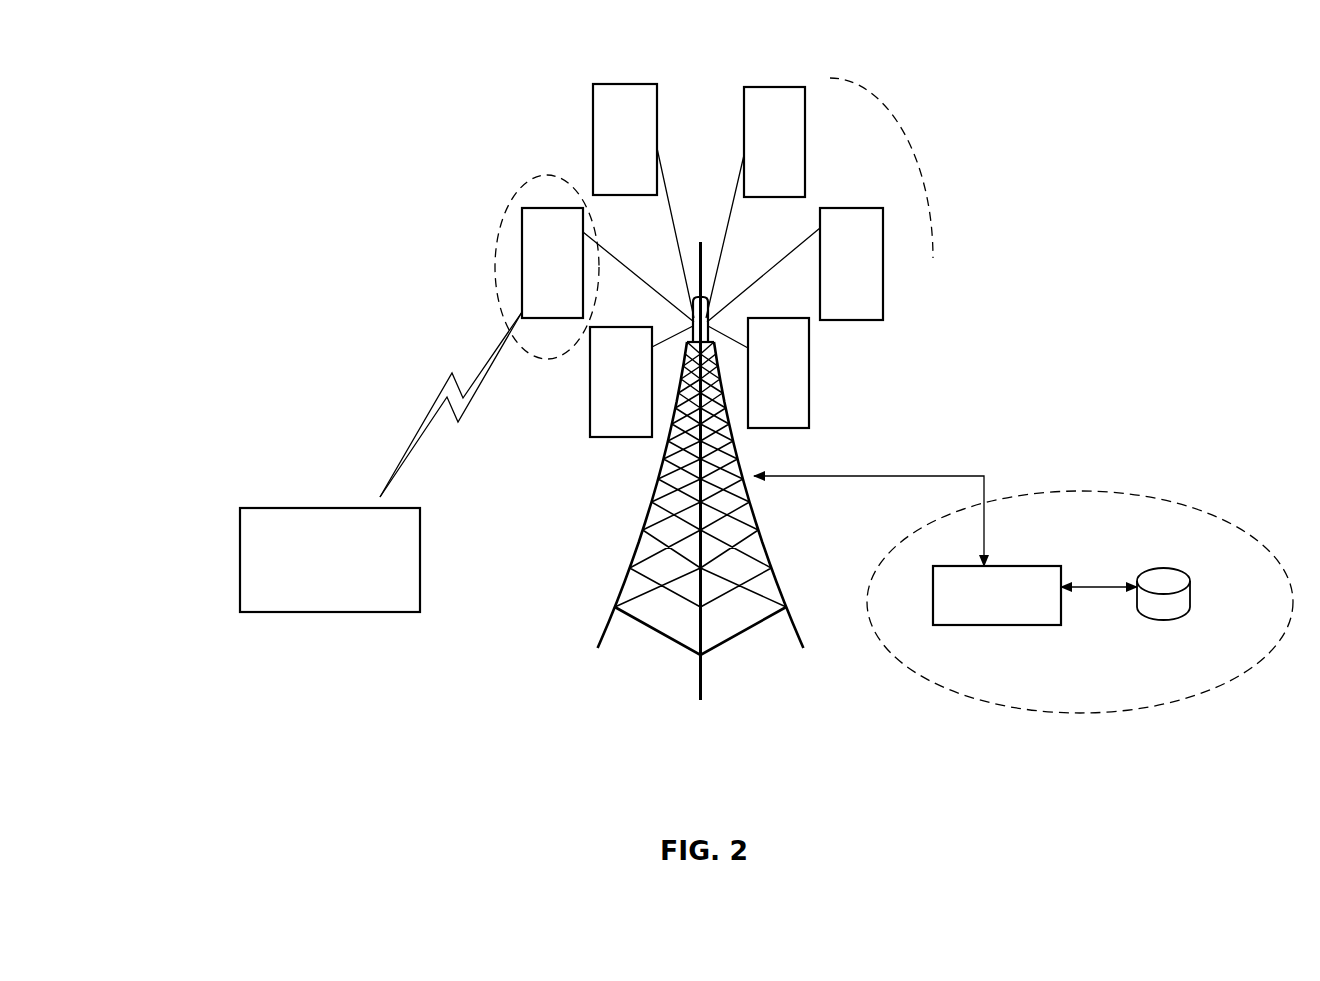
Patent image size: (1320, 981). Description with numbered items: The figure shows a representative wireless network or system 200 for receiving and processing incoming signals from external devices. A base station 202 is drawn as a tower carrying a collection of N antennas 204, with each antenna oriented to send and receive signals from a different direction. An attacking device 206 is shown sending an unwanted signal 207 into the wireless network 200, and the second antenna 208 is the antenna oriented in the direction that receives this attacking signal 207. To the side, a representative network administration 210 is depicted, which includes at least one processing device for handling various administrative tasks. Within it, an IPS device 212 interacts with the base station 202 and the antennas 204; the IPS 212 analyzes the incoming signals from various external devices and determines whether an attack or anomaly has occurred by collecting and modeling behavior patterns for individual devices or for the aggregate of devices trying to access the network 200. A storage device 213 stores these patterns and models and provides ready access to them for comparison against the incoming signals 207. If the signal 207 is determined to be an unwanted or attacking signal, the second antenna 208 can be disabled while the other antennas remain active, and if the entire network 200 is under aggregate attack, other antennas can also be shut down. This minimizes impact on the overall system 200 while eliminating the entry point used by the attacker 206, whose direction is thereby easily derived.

The wireless network 200 is at (402, 146).
The base station 202 is at (624, 654).
The antennas 204 is at (903, 131).
The attacking device 206 is at (287, 508).
The unwanted signal 207 is at (428, 410).
The antenna A2 208 is at (519, 250).
The network administration 210 is at (1136, 462).
The IPS device 212 is at (1010, 625).
The storage device 213 is at (1190, 598).